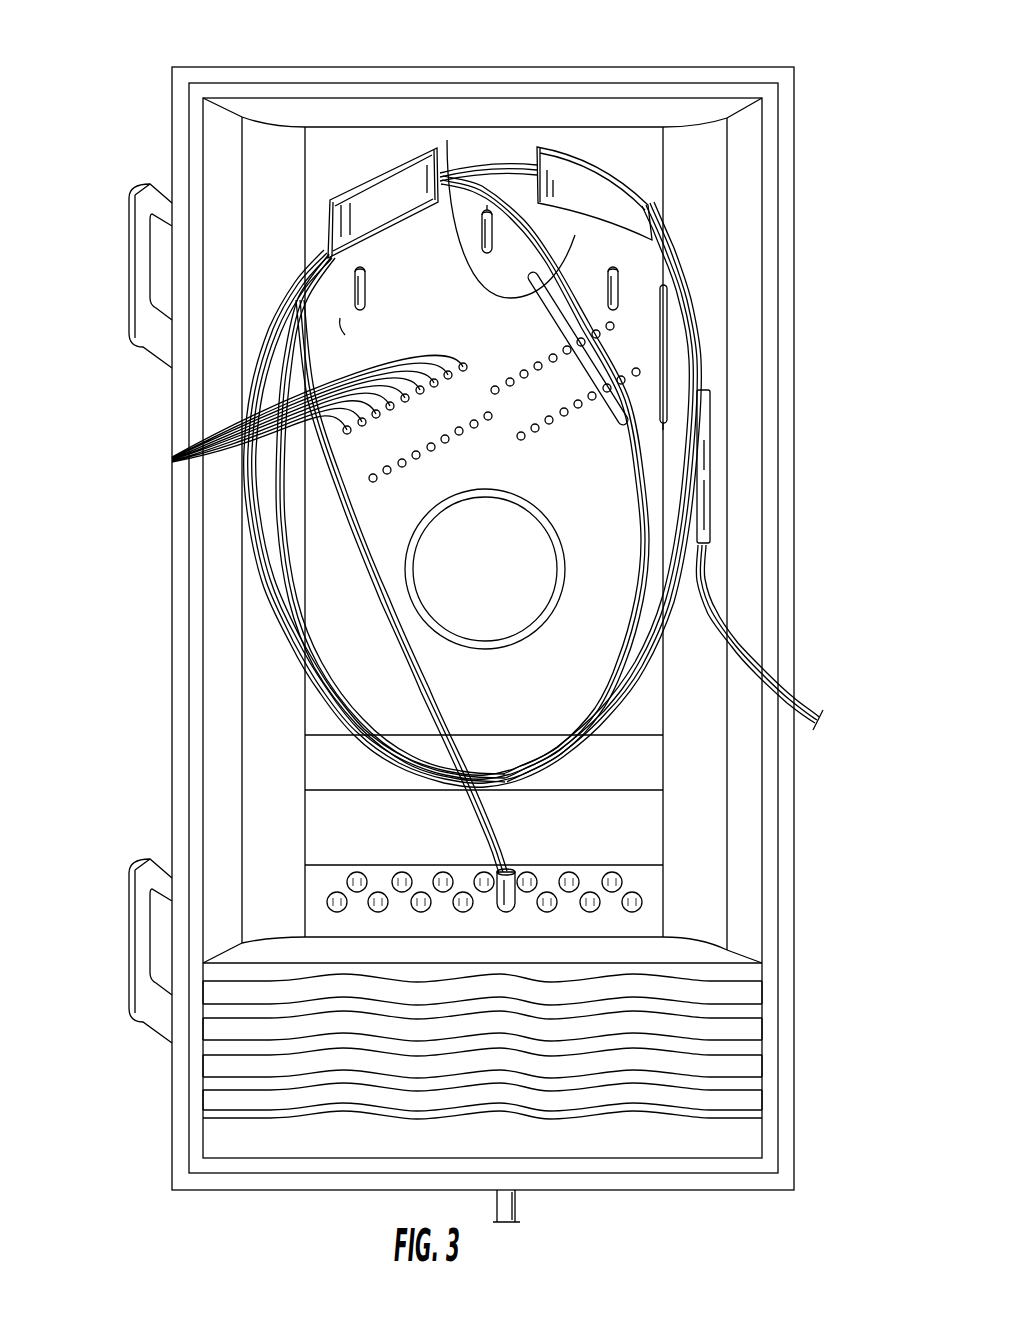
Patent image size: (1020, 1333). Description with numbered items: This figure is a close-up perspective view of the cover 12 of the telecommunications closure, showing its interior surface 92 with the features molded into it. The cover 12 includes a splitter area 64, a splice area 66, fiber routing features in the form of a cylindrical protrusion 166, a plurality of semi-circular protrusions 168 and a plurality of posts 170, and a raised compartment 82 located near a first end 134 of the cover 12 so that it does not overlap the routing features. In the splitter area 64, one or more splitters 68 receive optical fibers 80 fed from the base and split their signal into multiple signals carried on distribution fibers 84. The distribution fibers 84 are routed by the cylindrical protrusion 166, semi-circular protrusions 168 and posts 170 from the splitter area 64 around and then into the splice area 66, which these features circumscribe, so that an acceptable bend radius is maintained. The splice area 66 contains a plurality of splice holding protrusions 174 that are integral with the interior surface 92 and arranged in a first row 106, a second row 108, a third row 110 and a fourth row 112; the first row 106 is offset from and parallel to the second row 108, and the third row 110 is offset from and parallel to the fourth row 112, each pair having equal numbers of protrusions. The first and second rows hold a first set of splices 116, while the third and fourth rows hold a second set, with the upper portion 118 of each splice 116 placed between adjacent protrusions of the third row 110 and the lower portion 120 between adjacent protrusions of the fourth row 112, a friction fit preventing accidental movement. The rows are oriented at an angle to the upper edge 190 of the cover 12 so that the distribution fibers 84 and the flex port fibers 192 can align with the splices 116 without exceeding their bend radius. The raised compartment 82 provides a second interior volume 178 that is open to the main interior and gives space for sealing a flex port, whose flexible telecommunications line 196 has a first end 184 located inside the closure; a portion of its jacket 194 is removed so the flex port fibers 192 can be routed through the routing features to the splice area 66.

The cover 12 is at (622, 68).
The splitter area 64 is at (738, 406).
The splice area 66 is at (304, 372).
The splitter 68 is at (708, 500).
The optical fibers 80 is at (803, 707).
The raised compartment 82 is at (345, 828).
The distribution fibers 84 is at (527, 150).
The interior surface 92 is at (340, 327).
The first row 106 is at (330, 439).
The second row 108 is at (357, 489).
The third row 110 is at (628, 319).
The fourth row 112 is at (655, 352).
The splices 116 is at (575, 238).
The upper portion 118 is at (447, 140).
The lower portion 120 is at (668, 398).
The first end 134 is at (170, 1214).
The cylindrical protrusion 166 is at (558, 528).
The semi-circular protrusions 168 is at (372, 170).
The posts 170 is at (489, 205).
The splice holding protrusions 174 is at (172, 461).
The second interior volume 178 is at (606, 823).
The first end 184 is at (513, 873).
The upper edge 190 is at (285, 65).
The flex port fibers 192 is at (480, 808).
The jacket 194 is at (507, 895).
The flexible telecommunications line 196 is at (517, 1205).